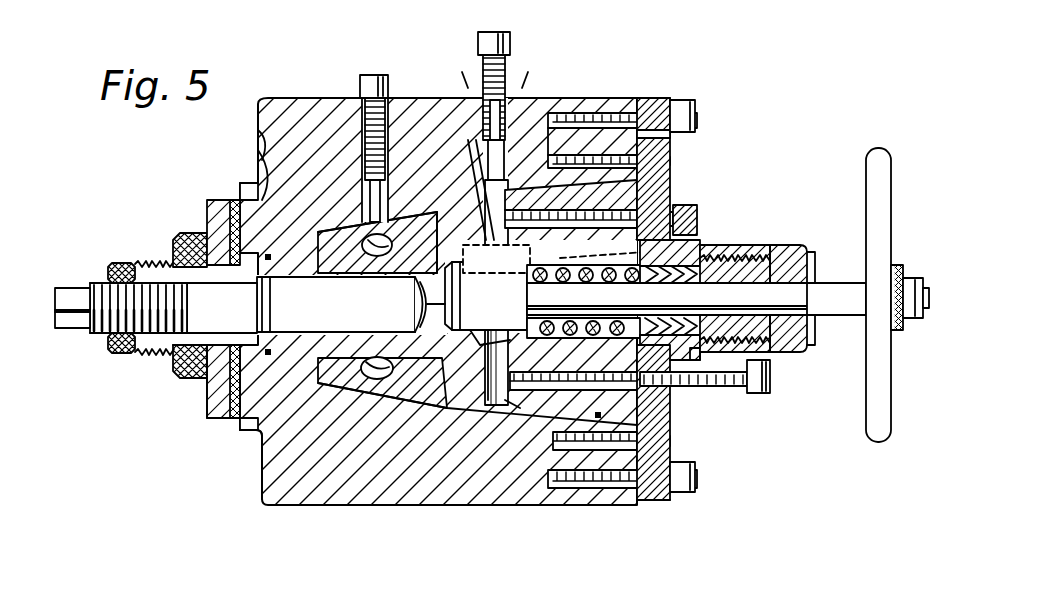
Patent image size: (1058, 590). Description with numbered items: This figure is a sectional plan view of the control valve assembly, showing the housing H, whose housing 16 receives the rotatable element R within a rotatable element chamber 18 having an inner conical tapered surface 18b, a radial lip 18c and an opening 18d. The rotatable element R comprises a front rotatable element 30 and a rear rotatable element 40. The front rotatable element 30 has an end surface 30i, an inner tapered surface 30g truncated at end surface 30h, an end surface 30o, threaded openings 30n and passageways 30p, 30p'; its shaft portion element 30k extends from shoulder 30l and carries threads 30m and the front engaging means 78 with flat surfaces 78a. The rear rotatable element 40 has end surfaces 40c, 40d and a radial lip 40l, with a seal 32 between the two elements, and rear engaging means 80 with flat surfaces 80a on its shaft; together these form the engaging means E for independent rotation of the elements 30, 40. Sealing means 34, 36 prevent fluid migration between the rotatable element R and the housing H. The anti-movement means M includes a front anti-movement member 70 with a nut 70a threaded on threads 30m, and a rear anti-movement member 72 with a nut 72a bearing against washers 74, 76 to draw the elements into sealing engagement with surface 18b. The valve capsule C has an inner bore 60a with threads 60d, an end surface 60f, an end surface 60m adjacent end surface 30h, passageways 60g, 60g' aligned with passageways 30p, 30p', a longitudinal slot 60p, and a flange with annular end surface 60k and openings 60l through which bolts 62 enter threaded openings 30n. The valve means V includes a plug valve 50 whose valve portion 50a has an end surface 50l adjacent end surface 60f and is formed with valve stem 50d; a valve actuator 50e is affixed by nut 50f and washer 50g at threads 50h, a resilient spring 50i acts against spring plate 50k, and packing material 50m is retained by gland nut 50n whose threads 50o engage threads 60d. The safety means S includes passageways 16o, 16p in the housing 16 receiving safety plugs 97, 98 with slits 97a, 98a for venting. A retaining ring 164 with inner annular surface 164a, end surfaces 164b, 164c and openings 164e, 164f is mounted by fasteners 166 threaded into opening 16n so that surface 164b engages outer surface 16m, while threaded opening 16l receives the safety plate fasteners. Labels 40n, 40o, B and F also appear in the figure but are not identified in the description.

The housing 16 is at (270, 95).
The housing H is at (305, 95).
The safety plug 97 is at (378, 74).
The slit 97a is at (358, 128).
The safety plug 98 is at (484, 33).
The slit 98a is at (488, 122).
The safety means S is at (512, 128).
The threaded opening 16n is at (552, 115).
The threaded opening 16l is at (565, 155).
The end surface 164b is at (607, 100).
The opening 164e is at (647, 112).
The fastener 166 is at (676, 102).
The passageway 16o is at (352, 192).
The passageway 16p is at (478, 185).
The end surface 30i is at (431, 226).
The end surface 40c is at (448, 210).
The passageway 30p is at (513, 162).
The end surface 30h is at (485, 247).
The block opening 40n is at (386, 250).
The end surface 40d is at (260, 141).
The sealing means 36 is at (260, 163).
The bearing washer 76 is at (240, 191).
The bearing washer 74 is at (178, 232).
The anti-movement means M is at (147, 262).
The nut 70a is at (112, 262).
The front anti-movement member 70 is at (108, 272).
The rear engaging means 80 is at (142, 262).
The threads 30m is at (92, 283).
The front engaging means 78 is at (70, 288).
The shaft portion element 30k is at (220, 304).
The shoulder 30l is at (222, 308).
The radial lip 40l is at (240, 319).
The seal 32 is at (272, 293).
The rotatable element chamber 18 is at (341, 304).
The radial lip 18c is at (328, 365).
The end surface 60m is at (416, 292).
The end surface 60f is at (424, 306).
The end surface 50l is at (428, 325).
The sealing means 34 is at (597, 187).
The inner surface 30g is at (530, 262).
The longitudinal slot 60p is at (602, 257).
The passageway 60g is at (486, 296).
The valve portion 50a is at (530, 300).
The resilient spring 50i is at (696, 301).
The inner bore 60a is at (680, 320).
The threads 60d is at (725, 320).
The opening 164f is at (695, 161).
The annular end surface 60k is at (690, 173).
The openings 60l is at (695, 199).
The valve capsule C is at (755, 242).
The direction F is at (765, 242).
The spring plate 50k is at (695, 223).
The threads 50o is at (785, 243).
The packing material 50m is at (705, 243).
The gland nut 50n is at (798, 246).
The plug valve 50 is at (828, 280).
The valve actuator 50e is at (890, 179).
The washer 50g is at (898, 264).
The nut 50f is at (904, 278).
The threads 50h is at (924, 300).
The valve stem 50d is at (860, 314).
The valve means V is at (518, 407).
The bolt 62 is at (772, 376).
The inner annular surface 164a is at (692, 386).
The end surface 30o is at (668, 407).
The retaining ring 164 is at (680, 426).
The outer surface 16m is at (642, 441).
The end surface 164c is at (668, 446).
The block opening 40o is at (394, 364).
The passageway 60g' is at (481, 373).
The rear rotatable element 40 is at (328, 390).
The inner conical tapered surface 18b is at (338, 400).
The direction B is at (357, 447).
The rotatable element R is at (397, 397).
The passageway 30p' is at (439, 454).
The threaded openings 30n is at (515, 420).
The front rotatable element 30 is at (522, 420).
The nut 72a is at (186, 360).
The rear anti-movement member 72 is at (190, 382).
The opening 18d is at (248, 425).
The flat surfaces 80a is at (150, 358).
The engaging means E is at (141, 353).
The flat surfaces 78a is at (70, 330).